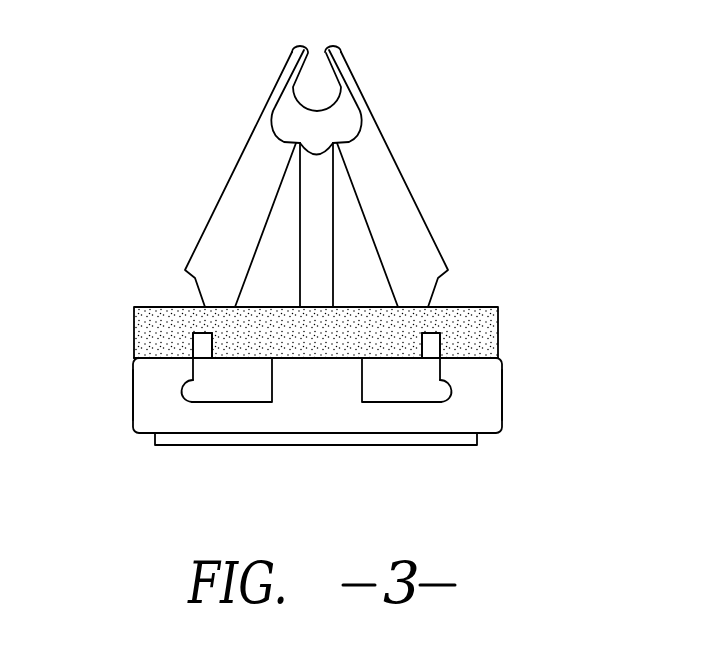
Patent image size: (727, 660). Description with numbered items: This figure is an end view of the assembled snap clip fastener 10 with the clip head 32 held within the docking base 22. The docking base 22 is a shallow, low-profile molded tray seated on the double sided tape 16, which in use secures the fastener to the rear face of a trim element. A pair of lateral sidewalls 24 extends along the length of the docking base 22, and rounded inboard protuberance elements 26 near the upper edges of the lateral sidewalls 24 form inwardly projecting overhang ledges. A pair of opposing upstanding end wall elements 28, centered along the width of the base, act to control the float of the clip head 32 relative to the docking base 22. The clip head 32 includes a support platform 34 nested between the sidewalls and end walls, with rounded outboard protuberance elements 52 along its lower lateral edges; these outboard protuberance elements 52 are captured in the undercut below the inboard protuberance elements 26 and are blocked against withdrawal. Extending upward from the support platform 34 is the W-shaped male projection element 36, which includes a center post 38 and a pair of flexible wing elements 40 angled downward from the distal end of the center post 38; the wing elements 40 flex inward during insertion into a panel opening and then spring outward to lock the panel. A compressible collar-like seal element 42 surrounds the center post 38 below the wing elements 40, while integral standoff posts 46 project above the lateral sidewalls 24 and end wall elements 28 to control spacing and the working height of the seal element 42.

The snap clip fastener 10 is at (515, 130).
The male projection element 36 is at (393, 150).
The flexible wing elements 40 is at (213, 208).
The center post 38 is at (333, 255).
The seal element 42 is at (473, 306).
The standoff posts 46 is at (192, 336).
The docking base 22 is at (505, 418).
The inboard protuberance elements 26 is at (185, 367).
The lateral sidewalls 24 is at (155, 410).
The support platform 34 is at (247, 387).
The clip head 32 is at (413, 417).
The outboard protuberance elements 52 is at (190, 390).
The end wall elements 28 is at (312, 383).
The double sided tape 16 is at (202, 447).